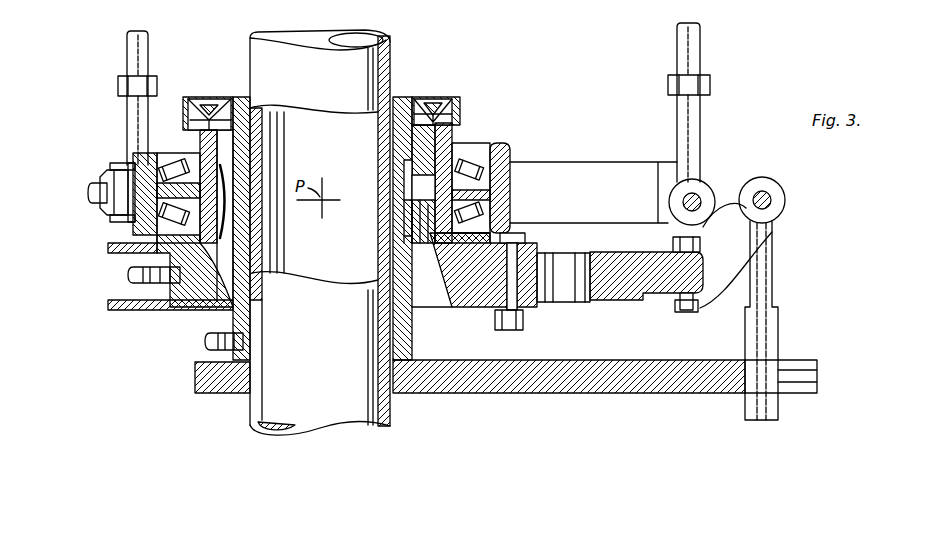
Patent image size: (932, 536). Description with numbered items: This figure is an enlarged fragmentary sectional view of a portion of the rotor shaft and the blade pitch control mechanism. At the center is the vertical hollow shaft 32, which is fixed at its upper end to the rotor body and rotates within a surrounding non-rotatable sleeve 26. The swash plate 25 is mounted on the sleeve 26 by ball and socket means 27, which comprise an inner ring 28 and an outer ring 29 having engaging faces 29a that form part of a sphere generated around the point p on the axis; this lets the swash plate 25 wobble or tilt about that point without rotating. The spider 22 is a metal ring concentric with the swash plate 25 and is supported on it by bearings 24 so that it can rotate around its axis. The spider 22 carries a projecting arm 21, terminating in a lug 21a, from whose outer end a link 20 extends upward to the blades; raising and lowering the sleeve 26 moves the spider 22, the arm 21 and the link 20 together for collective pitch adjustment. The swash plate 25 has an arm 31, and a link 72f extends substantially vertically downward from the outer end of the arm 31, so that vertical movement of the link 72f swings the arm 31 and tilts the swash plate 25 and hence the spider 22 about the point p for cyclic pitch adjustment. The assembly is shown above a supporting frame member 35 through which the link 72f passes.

The link 20 is at (142, 52).
The projecting arm 21 is at (110, 173).
The lug of tie bar 21a is at (668, 166).
The spider 22 is at (505, 155).
The bearing 24 is at (470, 163).
The swash plate 25 is at (472, 290).
The sleeve 26 is at (252, 255).
The ball and socket means 27 is at (420, 220).
The inner ring 28 is at (412, 190).
The outer ring 29 is at (405, 183).
The engaging face 29a is at (416, 218).
The arm 31 is at (626, 285).
The hollow shaft 32 is at (263, 408).
The frame plate 35 is at (498, 382).
The link 72f is at (762, 337).